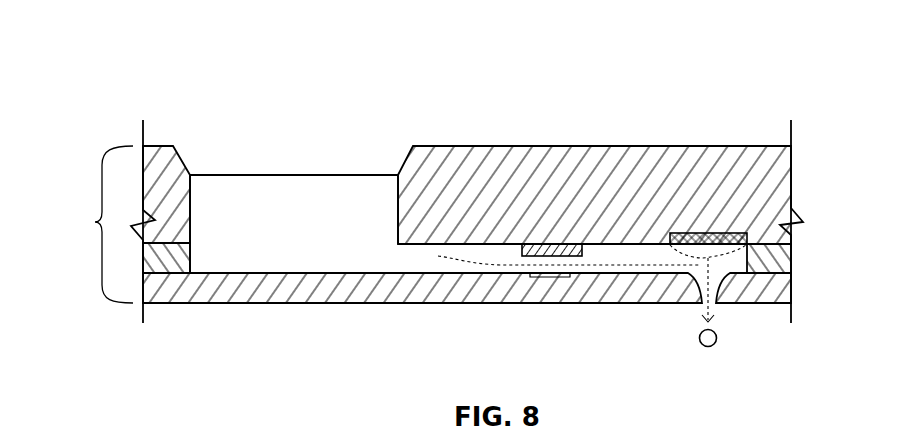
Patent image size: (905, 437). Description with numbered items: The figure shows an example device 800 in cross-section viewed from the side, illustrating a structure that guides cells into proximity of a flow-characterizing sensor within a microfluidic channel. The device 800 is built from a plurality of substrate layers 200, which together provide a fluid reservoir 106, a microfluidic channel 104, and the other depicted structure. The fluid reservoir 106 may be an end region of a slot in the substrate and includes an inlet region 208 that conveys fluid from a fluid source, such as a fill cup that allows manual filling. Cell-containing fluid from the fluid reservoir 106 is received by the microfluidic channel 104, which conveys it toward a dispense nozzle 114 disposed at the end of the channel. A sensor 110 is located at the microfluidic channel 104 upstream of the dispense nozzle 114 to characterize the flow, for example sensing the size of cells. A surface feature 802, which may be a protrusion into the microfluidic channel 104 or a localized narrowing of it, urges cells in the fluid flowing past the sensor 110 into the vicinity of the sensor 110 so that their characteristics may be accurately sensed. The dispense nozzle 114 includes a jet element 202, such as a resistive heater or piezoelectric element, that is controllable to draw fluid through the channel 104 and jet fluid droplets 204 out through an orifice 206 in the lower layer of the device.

The device 800 is at (206, 88).
The substrate layers 200 is at (90, 222).
The inlet region 208 is at (300, 146).
The fluid reservoir 106 is at (276, 250).
The second microfluidic channel 104 is at (418, 262).
The second sensor 110 is at (548, 290).
The second dispense nozzle 114 is at (733, 296).
The surface feature 802 is at (534, 247).
The jet element 202 is at (713, 234).
The orifice 206 is at (692, 310).
The fluid droplets 204 is at (701, 344).